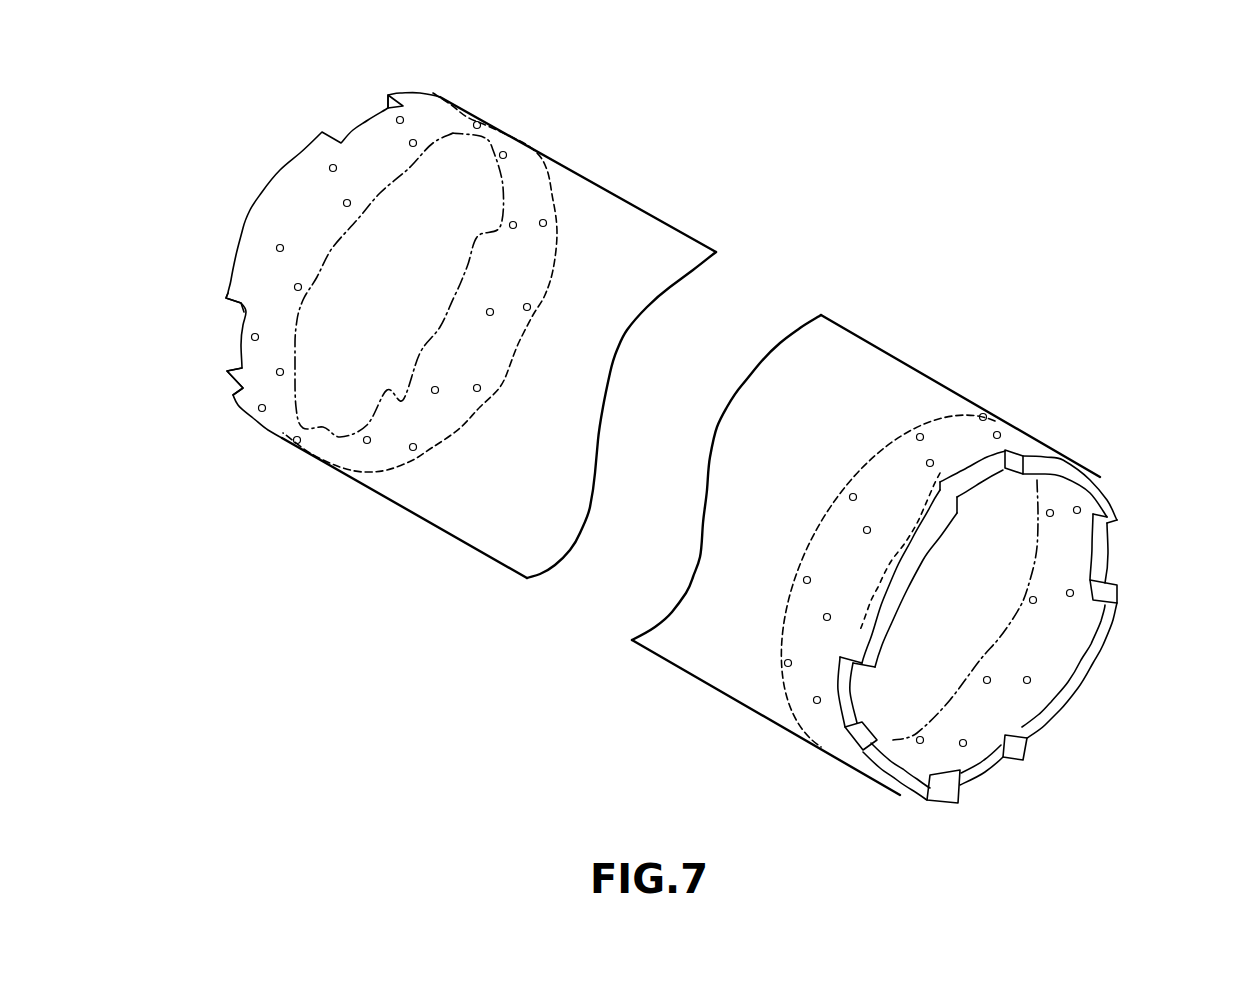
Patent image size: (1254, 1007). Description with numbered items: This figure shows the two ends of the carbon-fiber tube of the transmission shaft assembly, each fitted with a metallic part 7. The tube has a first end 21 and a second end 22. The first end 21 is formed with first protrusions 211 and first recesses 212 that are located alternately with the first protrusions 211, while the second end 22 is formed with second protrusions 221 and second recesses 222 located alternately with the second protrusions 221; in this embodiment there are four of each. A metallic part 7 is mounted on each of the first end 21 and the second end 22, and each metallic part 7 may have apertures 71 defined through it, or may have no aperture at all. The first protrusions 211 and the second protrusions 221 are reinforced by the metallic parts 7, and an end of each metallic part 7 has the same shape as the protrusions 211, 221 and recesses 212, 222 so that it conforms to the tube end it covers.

The metallic part 7 is at (303, 222).
The aperture 71 is at (276, 246).
The first end 21 is at (630, 263).
The first protrusion 211 is at (237, 253).
The first recess 212 is at (364, 131).
The second end 22 is at (810, 410).
The second protrusion 221 is at (1077, 690).
The second recess 222 is at (975, 473).